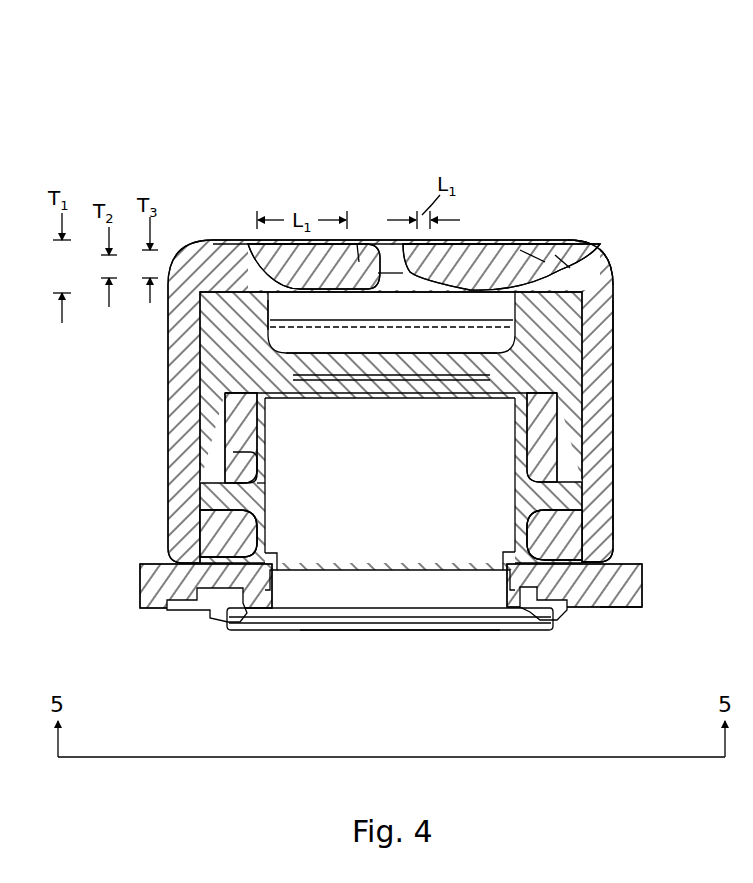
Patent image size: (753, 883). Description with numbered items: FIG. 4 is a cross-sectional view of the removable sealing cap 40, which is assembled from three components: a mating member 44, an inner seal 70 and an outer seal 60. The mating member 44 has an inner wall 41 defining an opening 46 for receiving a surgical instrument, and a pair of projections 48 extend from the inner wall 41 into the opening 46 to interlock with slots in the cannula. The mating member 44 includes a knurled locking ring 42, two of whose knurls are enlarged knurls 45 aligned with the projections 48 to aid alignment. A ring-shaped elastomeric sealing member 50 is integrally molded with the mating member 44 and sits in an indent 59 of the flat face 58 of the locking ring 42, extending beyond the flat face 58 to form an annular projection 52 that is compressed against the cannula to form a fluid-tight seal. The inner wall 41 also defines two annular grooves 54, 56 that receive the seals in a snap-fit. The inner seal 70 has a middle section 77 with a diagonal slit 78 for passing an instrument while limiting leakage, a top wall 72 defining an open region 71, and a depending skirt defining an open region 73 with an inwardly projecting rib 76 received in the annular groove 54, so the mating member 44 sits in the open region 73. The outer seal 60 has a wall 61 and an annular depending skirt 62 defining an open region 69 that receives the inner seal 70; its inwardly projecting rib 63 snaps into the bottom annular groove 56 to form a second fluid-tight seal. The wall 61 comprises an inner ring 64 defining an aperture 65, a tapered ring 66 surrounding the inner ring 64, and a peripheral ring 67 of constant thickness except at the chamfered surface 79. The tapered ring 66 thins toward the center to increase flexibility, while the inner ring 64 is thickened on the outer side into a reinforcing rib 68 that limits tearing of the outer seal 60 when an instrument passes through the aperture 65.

The cap 40 is at (549, 124).
The inner wall 41 is at (516, 521).
The locking ring 42 is at (630, 580).
The mating member 44 is at (211, 501).
The enlarged knurls 45 is at (627, 600).
The opening 46 is at (437, 560).
The projections 48 is at (276, 563).
The sealing member 50 is at (570, 600).
The annular projection 52 is at (232, 627).
The annular groove 54 is at (260, 453).
The annular groove 56 is at (217, 553).
The flat face 58 is at (141, 590).
The indent 59 is at (203, 600).
The outer seal 60 is at (577, 262).
The wall 61 is at (550, 249).
The annular depending skirt 62 is at (600, 460).
The inwardly projecting rib 63 is at (573, 540).
The inner ring 64 is at (383, 262).
The aperture 65 is at (357, 243).
The tapered ring 66 is at (488, 253).
The peripheral ring 67 is at (565, 254).
The reinforcing rib 68 is at (362, 250).
The open region 69 is at (393, 540).
The inner seal 70 is at (580, 362).
The open region 71 is at (292, 302).
The wall 72 is at (543, 332).
The open region 73 is at (345, 515).
The inwardly projecting rib 76 is at (260, 465).
The middle section 77 is at (563, 384).
The diagonal slit 78 is at (457, 383).
The chamfered surface 79 is at (600, 277).